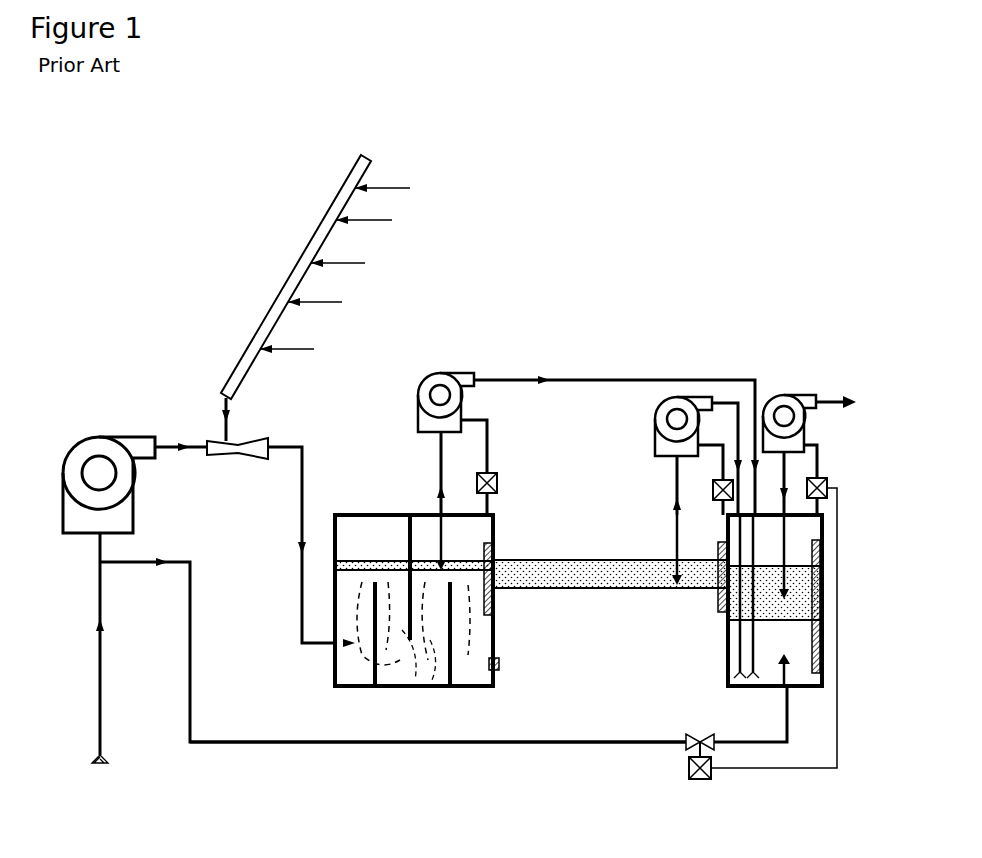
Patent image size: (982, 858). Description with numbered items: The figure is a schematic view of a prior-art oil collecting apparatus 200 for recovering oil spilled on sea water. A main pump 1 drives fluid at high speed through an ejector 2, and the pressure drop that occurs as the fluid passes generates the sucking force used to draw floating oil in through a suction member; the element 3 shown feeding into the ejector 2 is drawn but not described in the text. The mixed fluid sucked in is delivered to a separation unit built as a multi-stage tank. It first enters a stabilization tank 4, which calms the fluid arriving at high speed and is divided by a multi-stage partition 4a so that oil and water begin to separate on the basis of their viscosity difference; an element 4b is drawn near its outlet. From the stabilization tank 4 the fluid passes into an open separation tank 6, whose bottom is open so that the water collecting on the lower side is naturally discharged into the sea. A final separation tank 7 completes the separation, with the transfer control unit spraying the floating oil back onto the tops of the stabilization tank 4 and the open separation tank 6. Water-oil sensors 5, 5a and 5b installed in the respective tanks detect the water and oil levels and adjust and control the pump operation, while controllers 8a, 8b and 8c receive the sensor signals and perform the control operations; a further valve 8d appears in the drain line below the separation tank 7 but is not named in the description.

The main pump 1 is at (112, 438).
The ejector 2 is at (253, 457).
The solar collector 3 is at (276, 284).
The stabilization tank 4 is at (386, 515).
The multi-stage partition 4a is at (410, 675).
The outlet element 4b is at (498, 670).
The water-oil sensor 5 is at (493, 545).
The water-oil sensor 5a is at (500, 658).
The water-oil sensor 5b is at (822, 560).
The open separation tank 6 is at (587, 590).
The separation tank 7 is at (728, 683).
The controller 8a is at (495, 473).
The controller 8b is at (713, 487).
The controller 8c is at (820, 485).
The valve 8d is at (702, 780).
The desalination system 200 is at (415, 745).